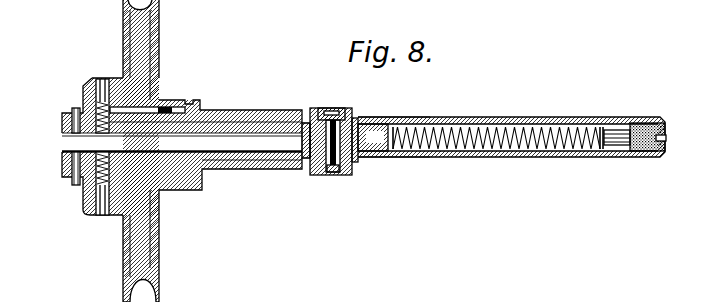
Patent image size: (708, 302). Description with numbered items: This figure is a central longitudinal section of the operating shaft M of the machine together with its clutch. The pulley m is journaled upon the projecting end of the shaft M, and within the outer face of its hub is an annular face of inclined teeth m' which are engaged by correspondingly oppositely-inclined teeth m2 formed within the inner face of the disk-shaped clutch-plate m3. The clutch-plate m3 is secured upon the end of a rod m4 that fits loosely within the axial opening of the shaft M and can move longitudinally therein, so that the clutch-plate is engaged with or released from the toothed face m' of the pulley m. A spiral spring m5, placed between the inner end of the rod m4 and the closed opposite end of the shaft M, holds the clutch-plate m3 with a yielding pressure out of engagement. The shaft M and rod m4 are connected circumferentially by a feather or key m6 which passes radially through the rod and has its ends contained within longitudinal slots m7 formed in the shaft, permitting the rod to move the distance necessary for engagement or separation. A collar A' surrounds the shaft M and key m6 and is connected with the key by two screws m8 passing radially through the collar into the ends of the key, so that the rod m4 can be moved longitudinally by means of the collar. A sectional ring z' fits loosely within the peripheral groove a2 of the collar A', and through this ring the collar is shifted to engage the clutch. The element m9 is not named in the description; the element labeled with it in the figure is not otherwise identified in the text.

The shaft M is at (257, 166).
The pulley m is at (139, 151).
The inclined teeth m' is at (99, 137).
The oppositely-inclined teeth m2 is at (82, 99).
The clutch-plate m3 is at (83, 196).
The rod m4 is at (182, 142).
The spiral spring m5 is at (500, 159).
The feather or key m6 is at (308, 112).
The longitudinal slots m7 is at (376, 123).
The screws m8 is at (352, 120).
The piston head m9 is at (373, 137).
The collar A' is at (321, 151).
The sectional ring z' is at (332, 157).
The peripheral groove a2 is at (322, 110).